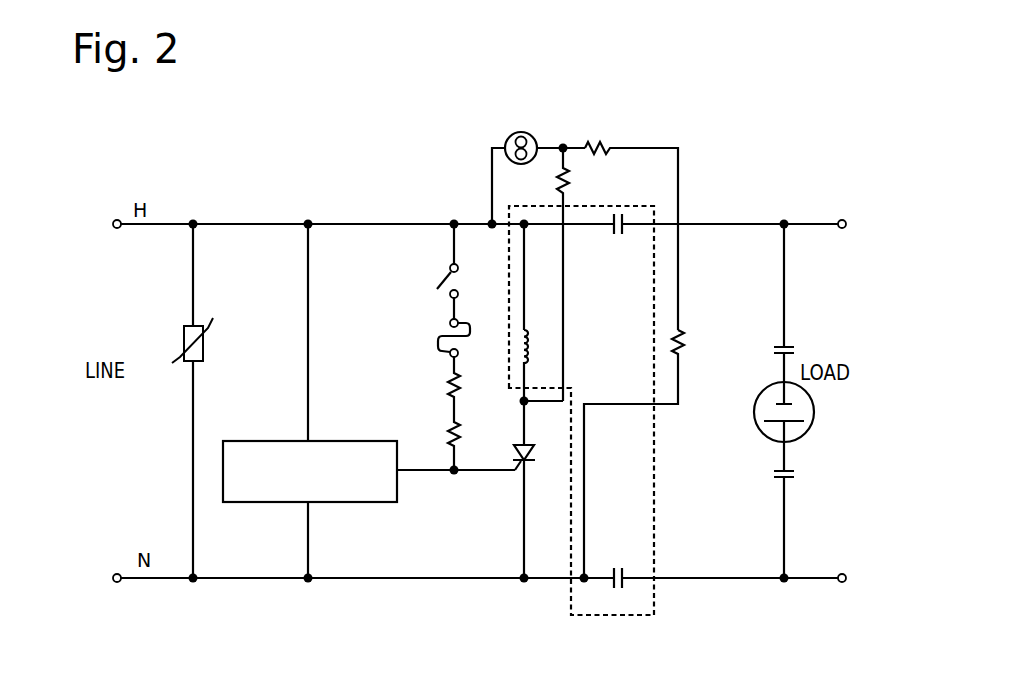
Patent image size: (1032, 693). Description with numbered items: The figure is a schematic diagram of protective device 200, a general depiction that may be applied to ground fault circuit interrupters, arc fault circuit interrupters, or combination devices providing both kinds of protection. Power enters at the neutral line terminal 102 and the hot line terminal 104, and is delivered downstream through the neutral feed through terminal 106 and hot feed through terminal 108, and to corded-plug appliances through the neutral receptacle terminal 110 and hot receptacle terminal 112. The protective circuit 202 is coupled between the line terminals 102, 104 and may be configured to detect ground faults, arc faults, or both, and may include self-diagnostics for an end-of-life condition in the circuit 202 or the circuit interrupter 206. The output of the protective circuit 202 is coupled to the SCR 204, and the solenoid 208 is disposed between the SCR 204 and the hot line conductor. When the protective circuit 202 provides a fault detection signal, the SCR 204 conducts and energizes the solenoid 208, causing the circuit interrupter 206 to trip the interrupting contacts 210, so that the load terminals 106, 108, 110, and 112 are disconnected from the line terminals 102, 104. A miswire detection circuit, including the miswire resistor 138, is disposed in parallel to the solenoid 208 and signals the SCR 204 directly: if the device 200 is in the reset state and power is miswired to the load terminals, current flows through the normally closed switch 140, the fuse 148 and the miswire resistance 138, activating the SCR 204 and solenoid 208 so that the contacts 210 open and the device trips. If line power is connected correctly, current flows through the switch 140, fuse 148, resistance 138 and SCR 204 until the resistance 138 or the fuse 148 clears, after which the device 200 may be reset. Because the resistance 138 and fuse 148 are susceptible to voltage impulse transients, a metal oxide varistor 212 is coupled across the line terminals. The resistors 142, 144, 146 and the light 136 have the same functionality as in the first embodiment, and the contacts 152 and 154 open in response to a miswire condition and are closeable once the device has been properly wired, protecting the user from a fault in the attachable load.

The protective device 200 is at (595, 66).
The neutral line terminal 102 is at (112, 580).
The hot line terminal 104 is at (112, 223).
The neutral feed through terminal 106 is at (848, 577).
The hot feed through terminal 108 is at (848, 223).
The neutral receptacle terminal 110 is at (768, 430).
The hot receptacle terminal 112 is at (779, 404).
The light 136 is at (511, 134).
The miswire resistor 138 is at (448, 384).
The normally closed switch 140 is at (437, 285).
The resistor 142 is at (680, 298).
The resistor 144 is at (598, 142).
The resistor 146 is at (569, 186).
The fuse 148 is at (438, 344).
The contacts 152 is at (795, 350).
The contacts 154 is at (795, 477).
The protective circuit 202 is at (338, 441).
The SCR 204 is at (515, 456).
The circuit interrupter 206 is at (595, 617).
The solenoid 208 is at (534, 346).
The interrupting contacts 210 is at (617, 236).
The metal oxide varistor 212 is at (199, 325).